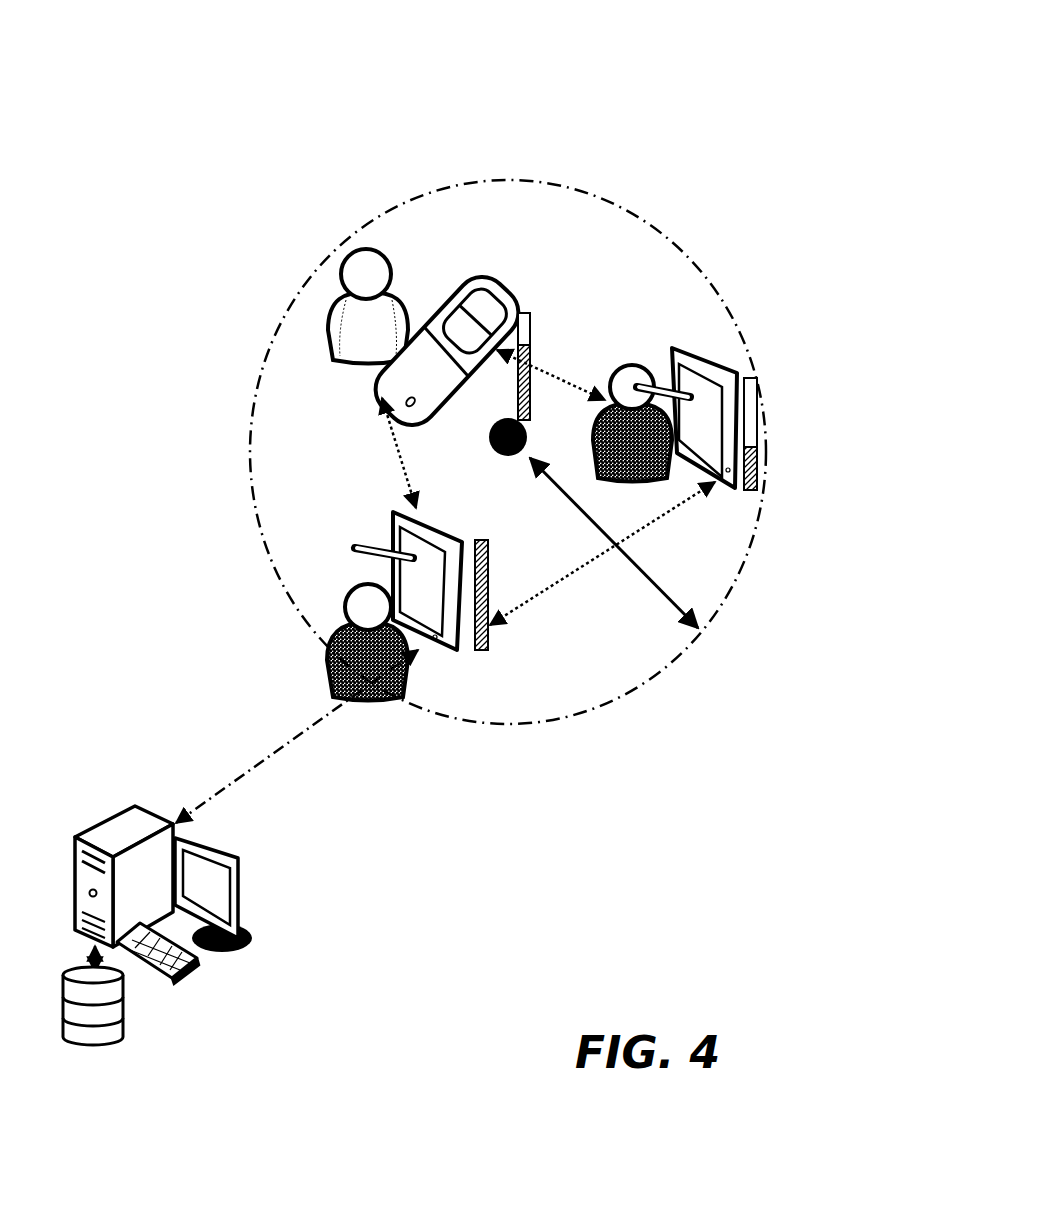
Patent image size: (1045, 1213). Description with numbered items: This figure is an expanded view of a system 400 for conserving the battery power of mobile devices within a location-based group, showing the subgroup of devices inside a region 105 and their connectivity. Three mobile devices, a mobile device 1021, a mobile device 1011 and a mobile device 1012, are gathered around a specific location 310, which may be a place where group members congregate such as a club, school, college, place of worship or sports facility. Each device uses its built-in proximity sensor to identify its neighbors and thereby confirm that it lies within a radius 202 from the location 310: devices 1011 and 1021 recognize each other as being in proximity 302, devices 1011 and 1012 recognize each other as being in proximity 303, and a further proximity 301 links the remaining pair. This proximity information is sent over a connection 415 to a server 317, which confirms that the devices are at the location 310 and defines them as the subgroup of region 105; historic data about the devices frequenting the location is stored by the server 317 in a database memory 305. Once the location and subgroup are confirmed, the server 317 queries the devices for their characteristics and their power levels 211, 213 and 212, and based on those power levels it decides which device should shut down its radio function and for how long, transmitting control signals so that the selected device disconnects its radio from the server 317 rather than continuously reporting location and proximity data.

The system environment 400 is at (648, 135).
The region 105 is at (665, 230).
The mobile device 1021 is at (330, 318).
The mobile device 1011 is at (393, 530).
The mobile device 1012 is at (695, 358).
The power level 213 is at (532, 353).
The power level 211 is at (488, 592).
The power level 212 is at (758, 422).
The location 310 is at (520, 452).
The proximity 301 is at (567, 380).
The proximity 302 is at (385, 416).
The proximity 303 is at (660, 510).
The radius 202 is at (652, 590).
The network connection to server 415 is at (275, 750).
The server 317 is at (75, 837).
The database memory 305 is at (125, 1030).